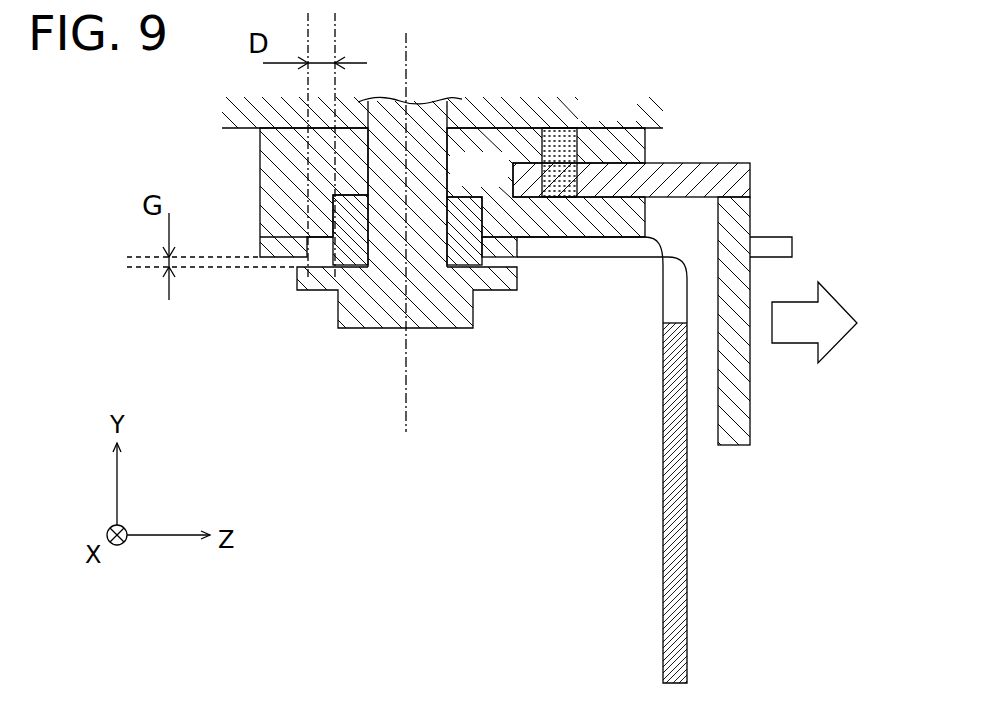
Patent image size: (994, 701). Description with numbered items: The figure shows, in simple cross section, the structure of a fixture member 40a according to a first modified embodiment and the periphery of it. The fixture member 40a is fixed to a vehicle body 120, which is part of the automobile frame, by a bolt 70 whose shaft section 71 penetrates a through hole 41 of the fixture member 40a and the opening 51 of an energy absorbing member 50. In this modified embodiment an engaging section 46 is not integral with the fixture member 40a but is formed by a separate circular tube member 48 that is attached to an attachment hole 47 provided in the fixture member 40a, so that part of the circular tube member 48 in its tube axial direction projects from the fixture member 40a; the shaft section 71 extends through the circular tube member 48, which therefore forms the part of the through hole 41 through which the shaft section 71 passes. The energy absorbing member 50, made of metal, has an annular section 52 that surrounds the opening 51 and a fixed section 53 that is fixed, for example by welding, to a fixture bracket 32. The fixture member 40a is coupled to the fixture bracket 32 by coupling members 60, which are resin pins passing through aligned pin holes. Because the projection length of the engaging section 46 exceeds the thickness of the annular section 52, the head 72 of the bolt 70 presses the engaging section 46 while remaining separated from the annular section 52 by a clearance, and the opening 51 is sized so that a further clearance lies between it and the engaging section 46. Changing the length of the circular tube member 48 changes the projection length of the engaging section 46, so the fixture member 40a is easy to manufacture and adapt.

The vehicle body 120 is at (634, 121).
The through hole 41 is at (371, 148).
The shaft section 71 is at (427, 140).
The head 72 is at (438, 313).
The bolt 70 is at (407, 224).
The annular section 52 is at (258, 252).
The engaging section 46 is at (345, 250).
The circular tube member 48 is at (350, 230).
The opening 51 is at (321, 243).
The attachment hole 47 is at (472, 222).
The fixture member 40a is at (504, 182).
The coupling member 60 is at (567, 133).
The fixture bracket 32 is at (698, 187).
The fixed section 53 is at (766, 237).
The energy absorbing member 50 is at (702, 523).